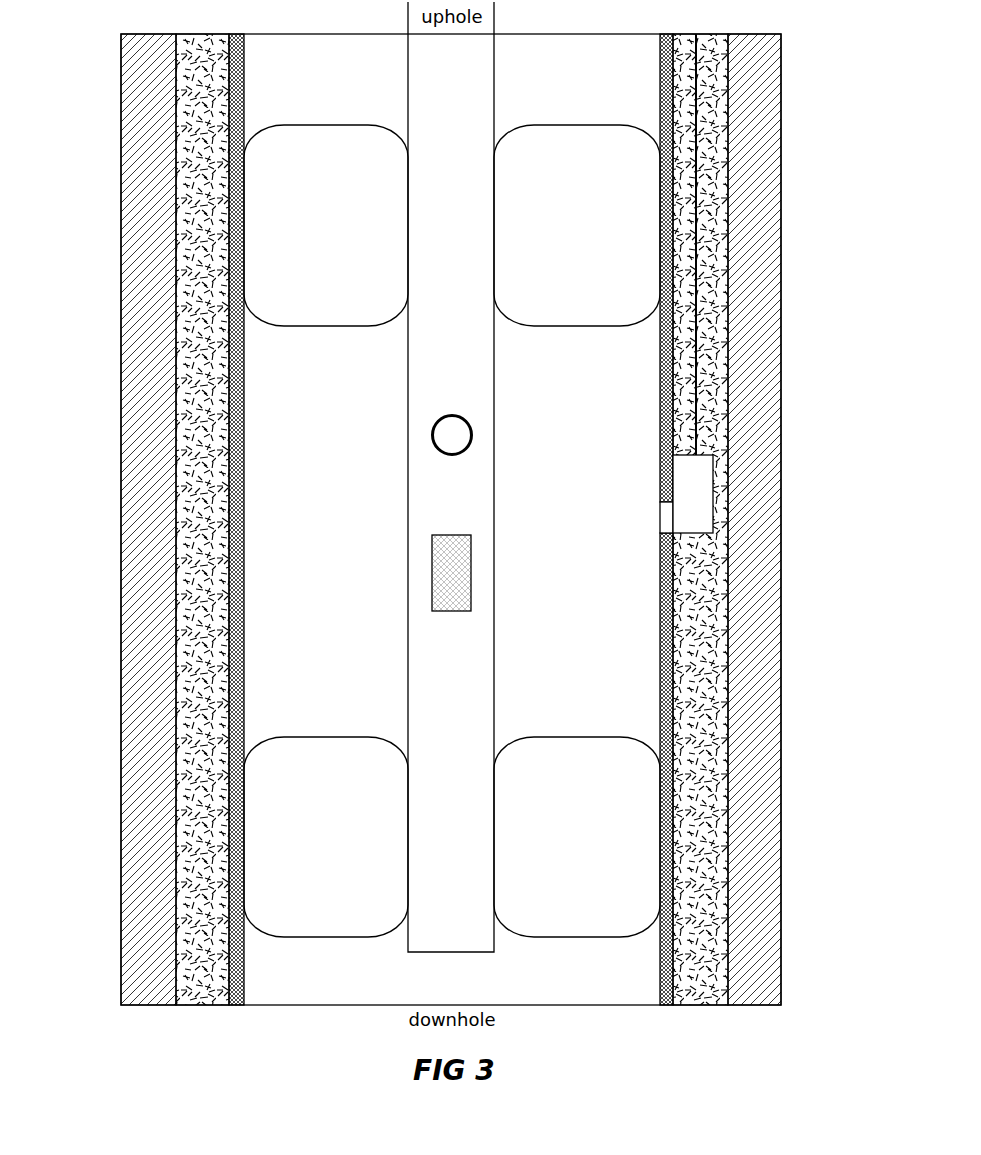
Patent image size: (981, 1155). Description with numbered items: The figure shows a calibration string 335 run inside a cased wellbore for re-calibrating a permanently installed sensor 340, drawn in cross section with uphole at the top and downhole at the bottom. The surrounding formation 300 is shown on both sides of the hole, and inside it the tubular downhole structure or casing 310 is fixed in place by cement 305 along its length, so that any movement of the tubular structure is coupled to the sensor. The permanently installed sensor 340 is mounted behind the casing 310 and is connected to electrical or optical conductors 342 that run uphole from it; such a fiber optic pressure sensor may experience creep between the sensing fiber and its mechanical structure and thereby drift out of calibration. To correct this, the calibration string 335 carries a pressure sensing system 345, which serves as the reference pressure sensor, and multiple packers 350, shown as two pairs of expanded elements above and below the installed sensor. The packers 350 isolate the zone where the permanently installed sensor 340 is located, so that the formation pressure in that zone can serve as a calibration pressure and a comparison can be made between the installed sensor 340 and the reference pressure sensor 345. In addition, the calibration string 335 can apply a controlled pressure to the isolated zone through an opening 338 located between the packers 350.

The subterranean formation 300 is at (148, 288).
The cement 305 is at (197, 463).
The casing 310 is at (230, 970).
The calibration string 335 is at (408, 113).
The opening 338 is at (432, 437).
The permanently installed sensor 340 is at (697, 490).
The electrical or optical conductors 342 is at (696, 222).
The pressure sensing system 345 is at (450, 580).
The packers 350 is at (303, 255).